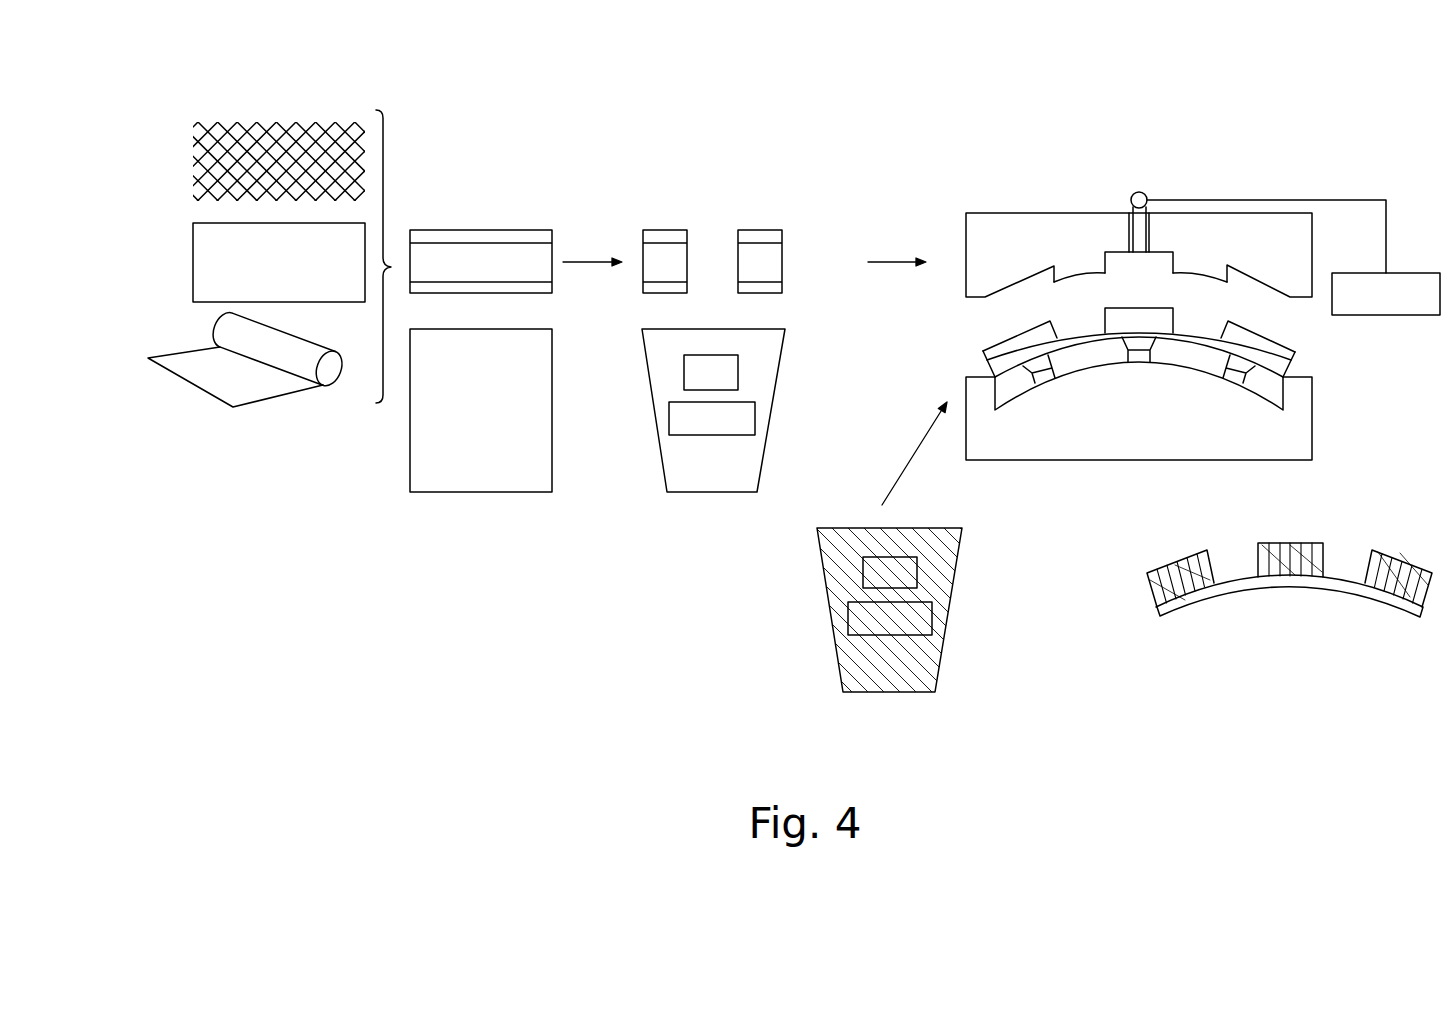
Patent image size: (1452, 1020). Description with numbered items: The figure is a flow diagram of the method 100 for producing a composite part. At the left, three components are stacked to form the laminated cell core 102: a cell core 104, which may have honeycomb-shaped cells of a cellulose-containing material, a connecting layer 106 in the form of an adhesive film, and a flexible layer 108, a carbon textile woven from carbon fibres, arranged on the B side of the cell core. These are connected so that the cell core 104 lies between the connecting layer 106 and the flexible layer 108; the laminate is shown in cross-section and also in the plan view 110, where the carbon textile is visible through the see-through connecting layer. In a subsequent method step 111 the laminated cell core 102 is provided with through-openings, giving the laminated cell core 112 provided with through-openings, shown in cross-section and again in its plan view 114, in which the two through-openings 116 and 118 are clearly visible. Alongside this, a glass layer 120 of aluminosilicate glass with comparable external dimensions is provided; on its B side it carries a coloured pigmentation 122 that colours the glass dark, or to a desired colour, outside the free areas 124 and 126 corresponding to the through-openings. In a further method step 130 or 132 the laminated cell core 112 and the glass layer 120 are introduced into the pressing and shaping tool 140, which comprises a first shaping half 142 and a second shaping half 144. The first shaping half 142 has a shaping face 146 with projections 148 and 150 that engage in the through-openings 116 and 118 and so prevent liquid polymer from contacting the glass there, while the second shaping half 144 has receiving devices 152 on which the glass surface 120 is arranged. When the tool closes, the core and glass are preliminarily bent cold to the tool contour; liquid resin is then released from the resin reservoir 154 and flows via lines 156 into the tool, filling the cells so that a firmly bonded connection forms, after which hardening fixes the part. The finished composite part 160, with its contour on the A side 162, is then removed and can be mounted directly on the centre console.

The method 100 is at (723, 96).
The laminated cell core 102 is at (479, 221).
The cell core 104 is at (192, 262).
The connecting layer 106 is at (263, 408).
The flexible layer 108 is at (195, 125).
The plan view 110 is at (478, 478).
The method step 111 is at (589, 261).
The laminated cell core provided with through-openings 112 is at (715, 221).
The plan view 114 is at (708, 478).
The through-opening 116 is at (727, 370).
The through-opening 118 is at (745, 417).
The glass layer 120 is at (819, 623).
The coloured pigmentation 122 is at (892, 678).
The free area 124 is at (902, 577).
The free area 126 is at (915, 622).
The method step 130 is at (906, 261).
The method step 132 is at (907, 460).
The pressing and shaping tool 140 is at (1327, 185).
The first shaping half 142 is at (1034, 238).
The second shaping half 144 is at (1107, 425).
The shaping face 146 is at (1117, 242).
The projection 148 is at (1042, 278).
The projection 150 is at (1223, 274).
The receiving devices 152 is at (1236, 382).
The resin reservoir 154 is at (1407, 283).
The lines 156 is at (1189, 200).
The finished composite part 160 is at (1339, 527).
The A side contour 162 is at (1292, 587).